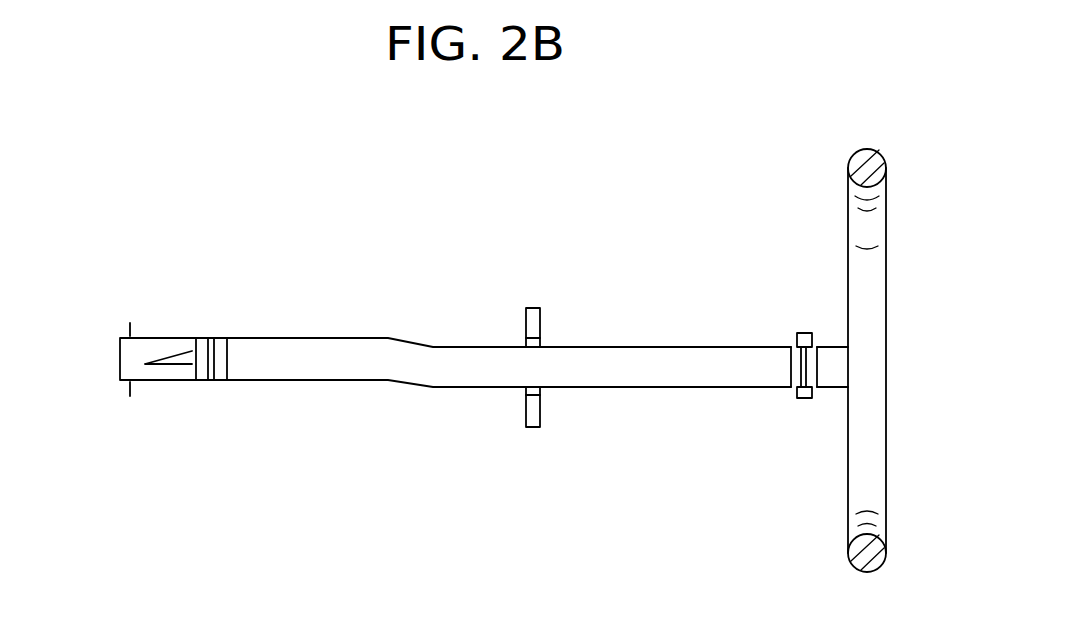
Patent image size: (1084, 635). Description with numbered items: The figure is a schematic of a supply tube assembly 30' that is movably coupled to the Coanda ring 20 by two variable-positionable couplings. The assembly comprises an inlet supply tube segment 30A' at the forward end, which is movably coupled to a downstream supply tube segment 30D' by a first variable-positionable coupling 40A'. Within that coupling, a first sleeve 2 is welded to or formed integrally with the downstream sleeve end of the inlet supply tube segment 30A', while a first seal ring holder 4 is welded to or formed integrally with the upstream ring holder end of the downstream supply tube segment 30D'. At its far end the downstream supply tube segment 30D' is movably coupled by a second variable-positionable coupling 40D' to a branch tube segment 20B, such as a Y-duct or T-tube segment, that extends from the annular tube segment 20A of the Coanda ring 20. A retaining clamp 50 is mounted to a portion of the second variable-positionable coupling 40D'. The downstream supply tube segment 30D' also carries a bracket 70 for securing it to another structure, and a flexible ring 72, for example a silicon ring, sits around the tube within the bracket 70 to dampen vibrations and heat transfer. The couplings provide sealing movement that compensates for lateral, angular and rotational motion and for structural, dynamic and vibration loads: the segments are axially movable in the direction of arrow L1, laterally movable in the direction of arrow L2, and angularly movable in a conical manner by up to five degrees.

The Coanda ring 20 is at (904, 349).
The annular tube segment 20A is at (868, 264).
The branch tube segment 20B is at (833, 357).
The supply tube assembly 30' is at (483, 324).
The inlet supply tube segment 30A' is at (157, 391).
The downstream supply tube segment 30D' is at (493, 388).
The first variable-positionable coupling 40A' is at (216, 429).
The second variable-positionable coupling 40D' is at (809, 443).
The first sleeve 2 is at (209, 350).
The first seal ring holder 4 is at (221, 350).
The retaining clamp 50 is at (802, 333).
The bracket 70 is at (559, 353).
The flexible ring 72 is at (541, 341).
The arrow indicating axial direction L1 is at (318, 289).
The arrow indicating lateral direction L2 is at (90, 325).